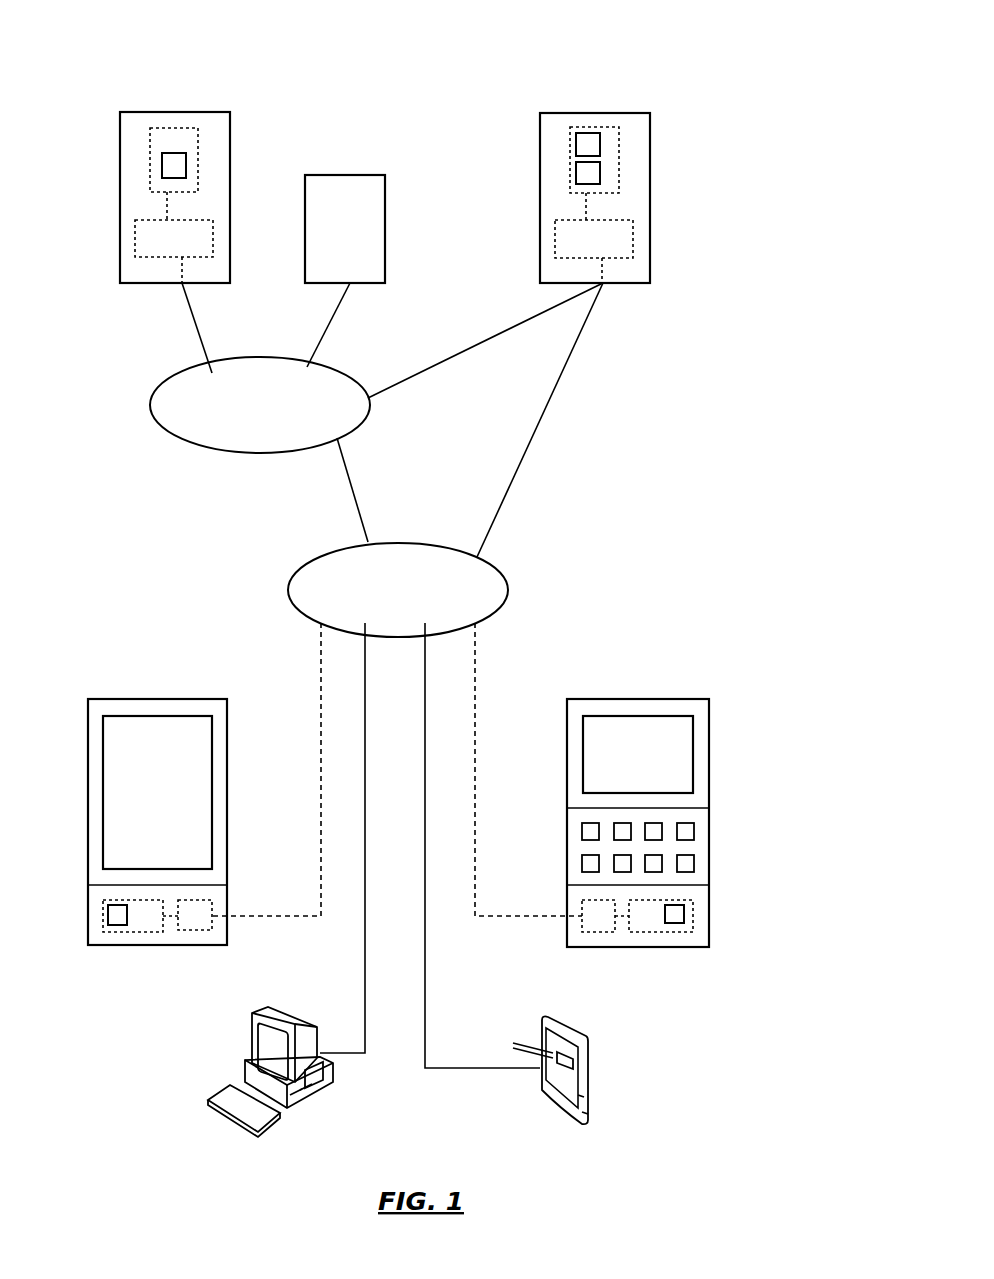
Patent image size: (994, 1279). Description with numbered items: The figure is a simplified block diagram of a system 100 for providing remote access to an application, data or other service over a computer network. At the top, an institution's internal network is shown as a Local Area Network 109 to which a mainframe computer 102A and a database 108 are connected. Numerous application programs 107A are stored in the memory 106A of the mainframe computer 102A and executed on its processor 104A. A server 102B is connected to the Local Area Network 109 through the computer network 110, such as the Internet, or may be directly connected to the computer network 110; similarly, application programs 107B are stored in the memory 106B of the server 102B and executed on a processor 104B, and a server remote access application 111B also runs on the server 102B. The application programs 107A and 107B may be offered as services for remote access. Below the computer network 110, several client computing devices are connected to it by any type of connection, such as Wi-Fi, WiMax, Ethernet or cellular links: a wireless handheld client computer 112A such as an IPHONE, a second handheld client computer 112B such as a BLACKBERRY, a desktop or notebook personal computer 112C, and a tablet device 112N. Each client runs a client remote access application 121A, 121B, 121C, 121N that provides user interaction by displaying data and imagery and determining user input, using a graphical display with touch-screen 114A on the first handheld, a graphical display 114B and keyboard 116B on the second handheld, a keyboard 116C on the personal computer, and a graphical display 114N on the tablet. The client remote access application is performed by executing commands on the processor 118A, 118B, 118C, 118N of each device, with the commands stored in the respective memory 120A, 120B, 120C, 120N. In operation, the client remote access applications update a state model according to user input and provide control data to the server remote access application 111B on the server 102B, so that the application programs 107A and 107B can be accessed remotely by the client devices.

The system 100 is at (778, 79).
The mainframe computer 102A is at (165, 112).
The processor 104A is at (165, 237).
The memory 106A is at (180, 145).
The application programs 107A is at (168, 168).
The database 108 is at (337, 222).
The server 102B is at (602, 113).
The processor 104B is at (600, 240).
The memory 106B is at (600, 145).
The application programs 107B is at (597, 175).
The server remote access application 111B is at (597, 148).
The Local Area Network (LAN) 109 is at (307, 388).
The computer network 110 is at (477, 590).
The client computer 112A is at (88, 733).
The graphical display with touch-screen 114A is at (149, 798).
The processor 118A is at (195, 922).
The memory 120A is at (132, 922).
The client remote access application 121A is at (117, 917).
The client computer 112B is at (693, 707).
The graphical display 114B is at (647, 755).
The keyboard 116B is at (678, 845).
The processor 118B is at (600, 920).
The memory 120B is at (670, 923).
The client remote access application 121B is at (673, 917).
The desktop/notebook personal computer 112C is at (253, 1057).
The keyboard 116C is at (228, 1115).
The processor 118C is at (300, 1090).
The memory 120C is at (303, 1092).
The client remote access application 121C is at (315, 1078).
The tablet device 112N is at (592, 1062).
The graphical display 114N is at (558, 1087).
The processor 118N is at (588, 1112).
The memory 120N is at (582, 1095).
The client remote access application 121N is at (563, 1062).